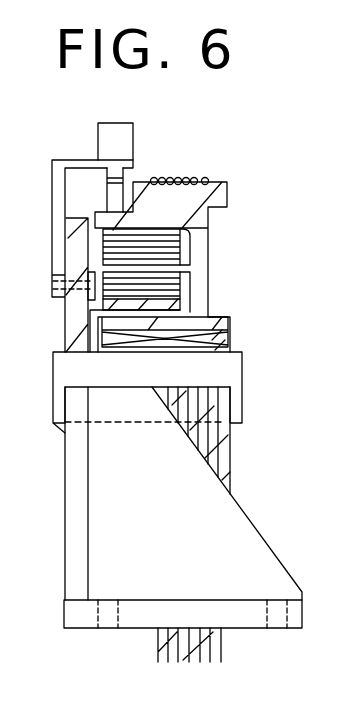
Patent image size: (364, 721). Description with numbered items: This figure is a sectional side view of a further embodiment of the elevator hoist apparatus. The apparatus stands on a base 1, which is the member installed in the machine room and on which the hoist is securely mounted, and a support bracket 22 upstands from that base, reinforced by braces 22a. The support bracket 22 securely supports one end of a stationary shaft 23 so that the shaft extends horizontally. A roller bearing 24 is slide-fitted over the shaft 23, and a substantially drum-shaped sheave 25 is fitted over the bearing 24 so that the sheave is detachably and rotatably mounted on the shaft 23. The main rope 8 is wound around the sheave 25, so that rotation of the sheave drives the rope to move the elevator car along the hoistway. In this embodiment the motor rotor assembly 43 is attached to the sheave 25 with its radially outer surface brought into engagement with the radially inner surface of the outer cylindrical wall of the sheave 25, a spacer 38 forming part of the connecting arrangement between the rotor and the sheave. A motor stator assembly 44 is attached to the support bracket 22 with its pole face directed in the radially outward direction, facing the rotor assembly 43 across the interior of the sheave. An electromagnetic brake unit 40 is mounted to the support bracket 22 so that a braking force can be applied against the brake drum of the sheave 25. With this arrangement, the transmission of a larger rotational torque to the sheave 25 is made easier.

The base 1 is at (137, 620).
The main rope 8 is at (222, 657).
The support bracket 22 is at (171, 493).
The braces 22a is at (300, 546).
The stationary shaft 23 is at (247, 355).
The roller bearing 24 is at (218, 337).
The sheave 25 is at (181, 193).
The spacer 38 is at (188, 250).
The electromagnetic brake unit 40 is at (98, 143).
The motor rotor assembly 43 is at (105, 244).
The motor stator assembly 44 is at (103, 288).